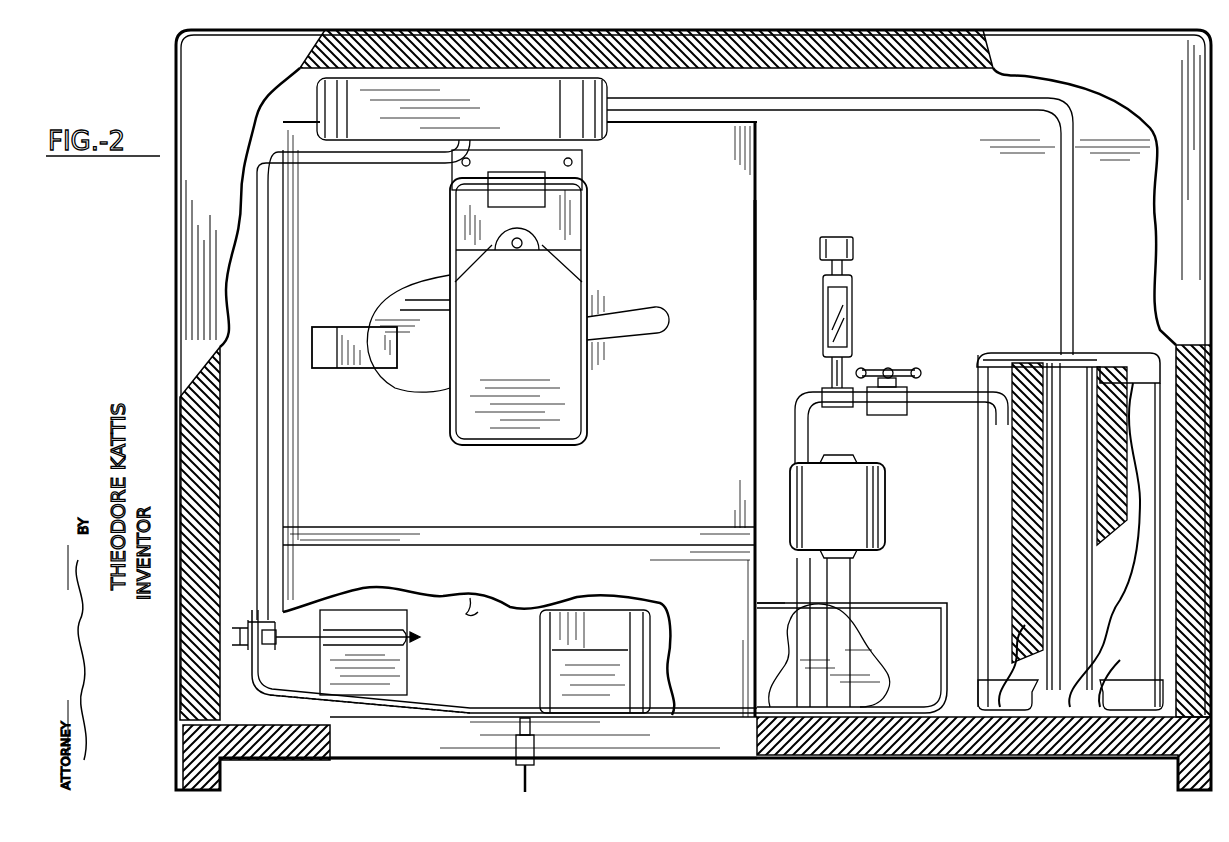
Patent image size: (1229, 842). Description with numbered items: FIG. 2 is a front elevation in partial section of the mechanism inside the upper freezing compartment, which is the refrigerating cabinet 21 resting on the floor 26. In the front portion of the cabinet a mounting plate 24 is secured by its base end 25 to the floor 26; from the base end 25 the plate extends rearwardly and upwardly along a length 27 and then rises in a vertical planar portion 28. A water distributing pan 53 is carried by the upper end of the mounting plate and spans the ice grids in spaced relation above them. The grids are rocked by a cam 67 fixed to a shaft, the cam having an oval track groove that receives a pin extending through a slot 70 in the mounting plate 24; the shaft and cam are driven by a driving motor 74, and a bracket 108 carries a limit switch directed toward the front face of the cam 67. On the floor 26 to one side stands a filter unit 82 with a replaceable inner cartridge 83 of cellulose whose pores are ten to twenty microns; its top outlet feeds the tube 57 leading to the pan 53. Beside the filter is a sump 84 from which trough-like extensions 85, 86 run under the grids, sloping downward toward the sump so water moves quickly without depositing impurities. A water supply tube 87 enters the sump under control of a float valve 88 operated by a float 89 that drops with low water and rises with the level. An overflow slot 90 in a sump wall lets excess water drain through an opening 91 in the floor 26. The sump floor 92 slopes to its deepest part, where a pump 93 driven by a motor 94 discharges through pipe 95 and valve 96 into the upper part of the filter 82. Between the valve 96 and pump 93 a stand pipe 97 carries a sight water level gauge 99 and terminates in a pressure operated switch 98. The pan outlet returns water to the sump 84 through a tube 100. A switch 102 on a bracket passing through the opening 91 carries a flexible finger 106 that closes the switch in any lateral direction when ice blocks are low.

The refrigerating cabinet 21 is at (976, 185).
The mounting plate 24 is at (762, 236).
The base end 25 is at (730, 603).
The floor 26 is at (398, 724).
The rearwardly and upwardly extending length 27 is at (738, 545).
The planar portion 28 is at (703, 185).
The water distributing pan 53 is at (399, 123).
The tube 57 is at (934, 100).
The cam 67 is at (425, 310).
The slot 70 is at (660, 320).
The driving motor 74 is at (482, 430).
The filter unit 82 is at (1120, 365).
The inner cartridge 83 is at (1030, 495).
The sump 84 is at (272, 680).
The trough-like extension 85 is at (398, 676).
The trough-like extension 86 is at (580, 615).
The water supply tube 87 is at (238, 636).
The float valve 88 is at (274, 652).
The float 89 is at (420, 637).
The slot 90 is at (468, 616).
The opening 91 is at (735, 745).
The floor of the sump 92 is at (335, 700).
The pump 93 is at (885, 678).
The motor 94 is at (864, 518).
The discharge pipe 95 is at (795, 424).
The valve 96 is at (882, 402).
The stand pipe 97 is at (832, 372).
The pressure operated switch 98 is at (836, 248).
The sight water level gauge 99 is at (835, 287).
The tube 100 is at (360, 160).
The switch 102 is at (516, 745).
The flexible finger 106 is at (524, 785).
The bracket 108 is at (365, 355).